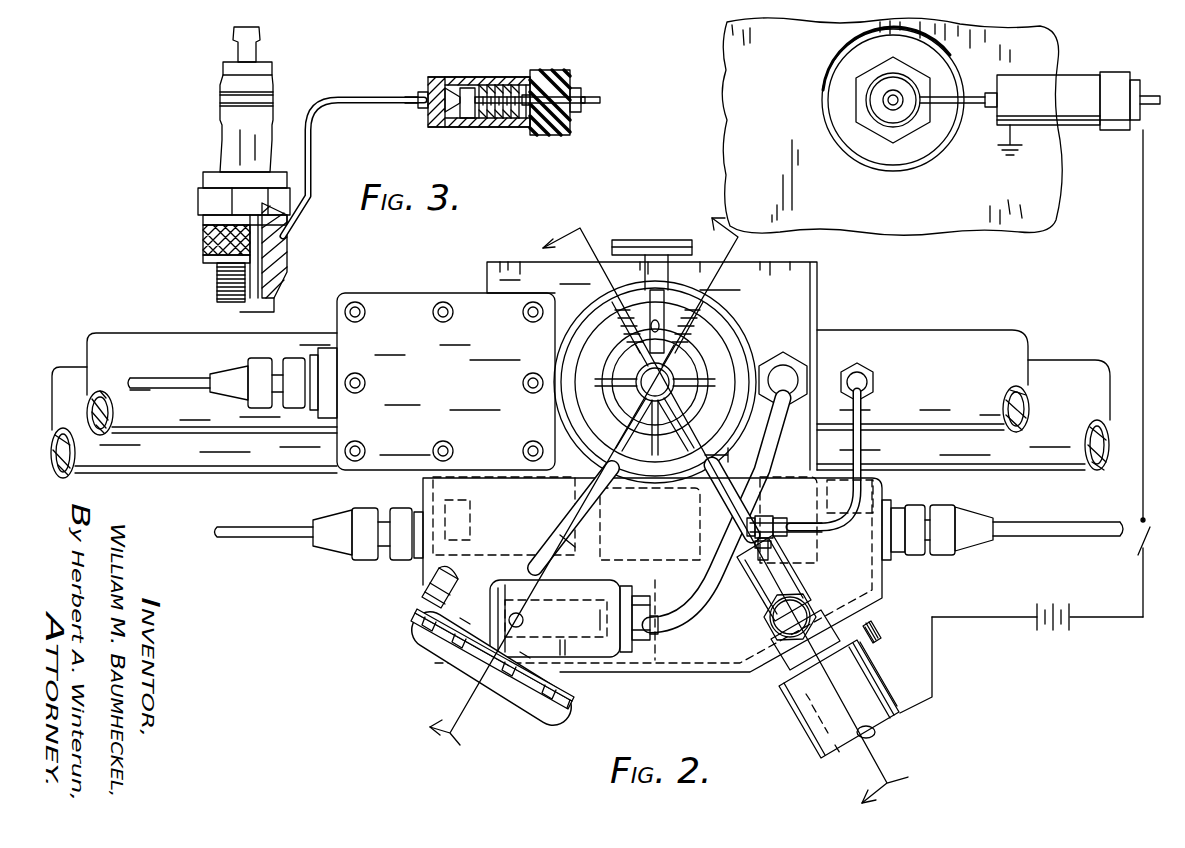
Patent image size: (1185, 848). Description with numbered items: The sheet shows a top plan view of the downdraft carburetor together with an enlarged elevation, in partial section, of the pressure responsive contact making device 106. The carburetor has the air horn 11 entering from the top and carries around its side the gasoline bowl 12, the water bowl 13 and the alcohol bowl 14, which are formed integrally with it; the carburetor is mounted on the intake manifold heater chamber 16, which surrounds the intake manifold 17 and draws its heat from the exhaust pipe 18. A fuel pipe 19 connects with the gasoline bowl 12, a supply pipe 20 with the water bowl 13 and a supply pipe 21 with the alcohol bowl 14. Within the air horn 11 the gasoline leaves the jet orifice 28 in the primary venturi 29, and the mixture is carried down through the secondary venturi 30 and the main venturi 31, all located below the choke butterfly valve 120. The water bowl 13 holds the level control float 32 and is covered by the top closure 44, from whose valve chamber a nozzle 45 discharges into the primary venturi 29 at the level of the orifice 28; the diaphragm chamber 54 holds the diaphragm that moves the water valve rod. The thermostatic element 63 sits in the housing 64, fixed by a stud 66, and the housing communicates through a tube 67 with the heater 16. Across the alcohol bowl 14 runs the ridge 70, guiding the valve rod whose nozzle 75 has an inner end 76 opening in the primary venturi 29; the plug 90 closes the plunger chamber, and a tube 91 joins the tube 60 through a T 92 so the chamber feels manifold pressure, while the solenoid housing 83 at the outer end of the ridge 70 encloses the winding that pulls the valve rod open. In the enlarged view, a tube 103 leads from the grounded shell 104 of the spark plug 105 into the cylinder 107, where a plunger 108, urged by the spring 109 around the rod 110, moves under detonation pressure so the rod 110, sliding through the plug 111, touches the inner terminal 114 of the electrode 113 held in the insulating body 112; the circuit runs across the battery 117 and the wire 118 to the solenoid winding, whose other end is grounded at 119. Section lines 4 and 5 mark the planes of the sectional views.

In FIG. 2, the section line 4- 4 is at (592, 489).
In FIG. 2, the section line 5- 5 is at (730, 510).
In FIG. 2, the air horn 11 is at (1143, 262).
In FIG. 2, the gasoline bowl 12 is at (405, 308).
In FIG. 2, the water bowl 13 is at (423, 578).
In FIG. 2, the alcohol bowl 14 is at (893, 574).
In FIG. 2, the intake manifold heater chamber 16 is at (818, 283).
In FIG. 2, the intake manifold 17 is at (130, 350).
In FIG. 2, the exhaust pipe 18 is at (252, 472).
In FIG. 2, the fuel pipe 19 is at (175, 388).
In FIG. 2, the water supply pipe 20 is at (265, 540).
In FIG. 2, the alcohol supply pipe 21 is at (1052, 528).
In FIG. 2, the jet orifice 28 is at (634, 325).
In FIG. 2, the primary venturi 29 is at (700, 375).
In FIG. 2, the secondary venturi 30 is at (612, 398).
In FIG. 2, the main venturi 31 is at (735, 427).
In FIG. 2, the level control float 32 is at (555, 618).
In FIG. 2, the top closure 44 is at (553, 527).
In FIG. 2, the nozzle 45 is at (600, 430).
In FIG. 2, the diaphragm chamber 54 is at (545, 720).
In FIG. 2, the tube 60 is at (860, 413).
In FIG. 2, the bi-metallic thermostatic element 63 is at (612, 672).
In FIG. 2, the housing 64 is at (460, 665).
In FIG. 2, the stud 66 is at (523, 621).
In FIG. 2, the tube 67 is at (680, 613).
In FIG. 2, the ridge 70 is at (753, 583).
In FIG. 2, the nozzle 75 is at (738, 448).
In FIG. 2, the inner end 76 is at (668, 325).
In FIG. 2, the cylinder 83 is at (790, 705).
In FIG. 2, the plug 90 is at (773, 628).
In FIG. 2, the tube 91 is at (773, 550).
In FIG. 2, the T 92 is at (767, 517).
In FIG. 3, the tube 103 is at (316, 222).
In FIG. 2, the tube 103 is at (976, 122).
In FIG. 3, the shell 104 is at (203, 240).
In FIG. 3, the spark plug 105 is at (238, 137).
In FIG. 2, the spark plug 105 is at (887, 120).
In FIG. 3, the contact making device 106 is at (430, 80).
In FIG. 2, the contact making device 106 is at (1018, 90).
In FIG. 3, the cylinder 107 is at (452, 124).
In FIG. 3, the plunger 108 is at (464, 86).
In FIG. 3, the spring 109 is at (488, 125).
In FIG. 3, the rod 110 is at (505, 100).
In FIG. 3, the plug 111 is at (548, 82).
In FIG. 2, the plug 111 is at (1112, 82).
In FIG. 3, the insulating body 112 is at (574, 80).
In FIG. 2, the insulating body 112 is at (1138, 72).
In FIG. 3, the electrode 113 is at (602, 100).
In FIG. 3, the inner terminal 114 is at (545, 128).
In FIG. 2, the inner terminal 114 is at (875, 736).
In FIG. 2, the battery 117 is at (1053, 638).
In FIG. 2, the wire 118 is at (973, 620).
In FIG. 2, the ground 119 is at (882, 636).
In FIG. 2, the choke butterfly valve 120 is at (658, 285).